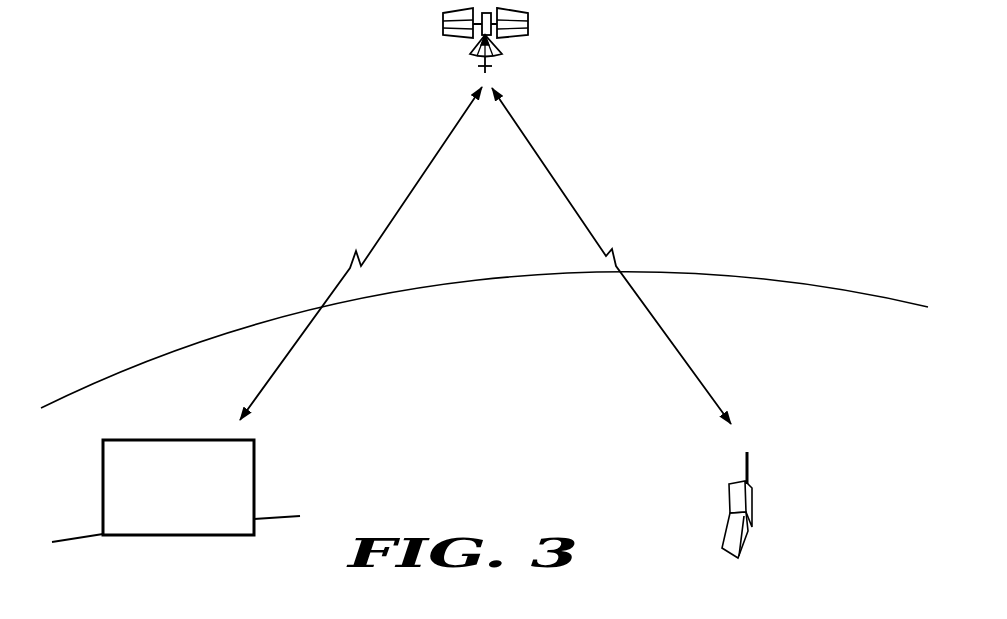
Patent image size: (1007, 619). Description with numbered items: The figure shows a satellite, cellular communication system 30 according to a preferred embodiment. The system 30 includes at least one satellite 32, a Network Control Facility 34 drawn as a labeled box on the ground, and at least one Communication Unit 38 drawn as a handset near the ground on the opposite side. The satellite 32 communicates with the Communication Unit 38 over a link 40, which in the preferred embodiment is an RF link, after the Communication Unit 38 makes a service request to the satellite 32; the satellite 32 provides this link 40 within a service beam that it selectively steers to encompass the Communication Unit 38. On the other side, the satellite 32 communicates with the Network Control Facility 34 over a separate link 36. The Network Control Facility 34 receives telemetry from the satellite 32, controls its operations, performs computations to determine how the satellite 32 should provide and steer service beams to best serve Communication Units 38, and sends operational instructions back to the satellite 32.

The satellite, cellular communication system 30 is at (498, 507).
The satellite 32 is at (512, 38).
The Network Control Facility 34 is at (127, 440).
The link 36 is at (419, 177).
The Communication Unit 38 is at (757, 507).
The link 40 is at (668, 338).